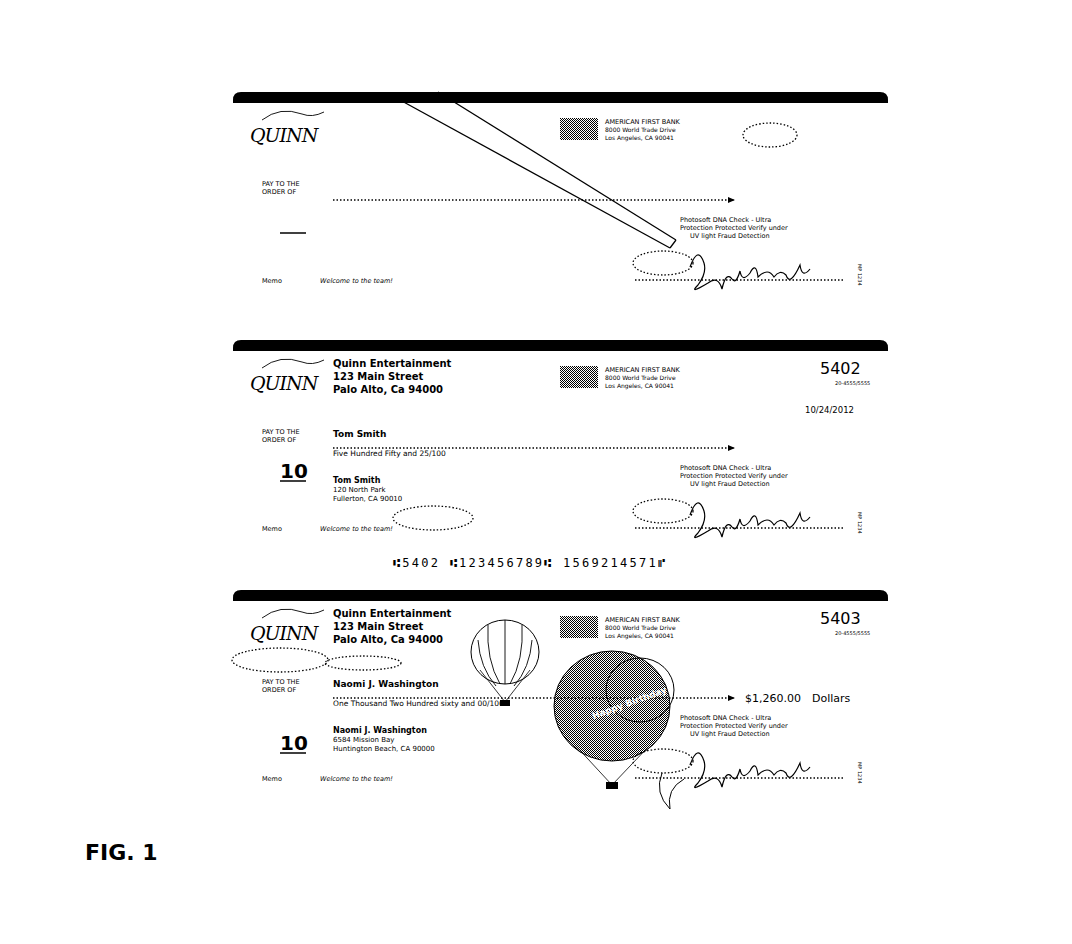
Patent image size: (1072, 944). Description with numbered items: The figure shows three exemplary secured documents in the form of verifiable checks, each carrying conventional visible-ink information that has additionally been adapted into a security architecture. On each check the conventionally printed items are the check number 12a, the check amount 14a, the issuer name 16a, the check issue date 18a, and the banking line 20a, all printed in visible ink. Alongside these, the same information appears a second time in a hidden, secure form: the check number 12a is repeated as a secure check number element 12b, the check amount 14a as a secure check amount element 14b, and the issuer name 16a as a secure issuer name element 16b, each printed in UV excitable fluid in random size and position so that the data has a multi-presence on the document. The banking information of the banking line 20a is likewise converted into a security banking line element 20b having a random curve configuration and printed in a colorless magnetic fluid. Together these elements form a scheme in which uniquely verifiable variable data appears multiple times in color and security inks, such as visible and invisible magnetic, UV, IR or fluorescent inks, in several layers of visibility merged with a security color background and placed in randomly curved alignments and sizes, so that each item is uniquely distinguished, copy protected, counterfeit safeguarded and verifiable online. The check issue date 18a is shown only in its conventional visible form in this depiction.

The check number 12a is at (862, 110).
The check number element 12b is at (767, 110).
The check amount 14a is at (790, 440).
The check amount element 14b is at (400, 527).
The issuer name 16a is at (330, 118).
The issuer name element 16b is at (497, 172).
The check issue date 18a is at (868, 658).
The banking line 20a is at (387, 813).
The banking line element 20b is at (325, 673).